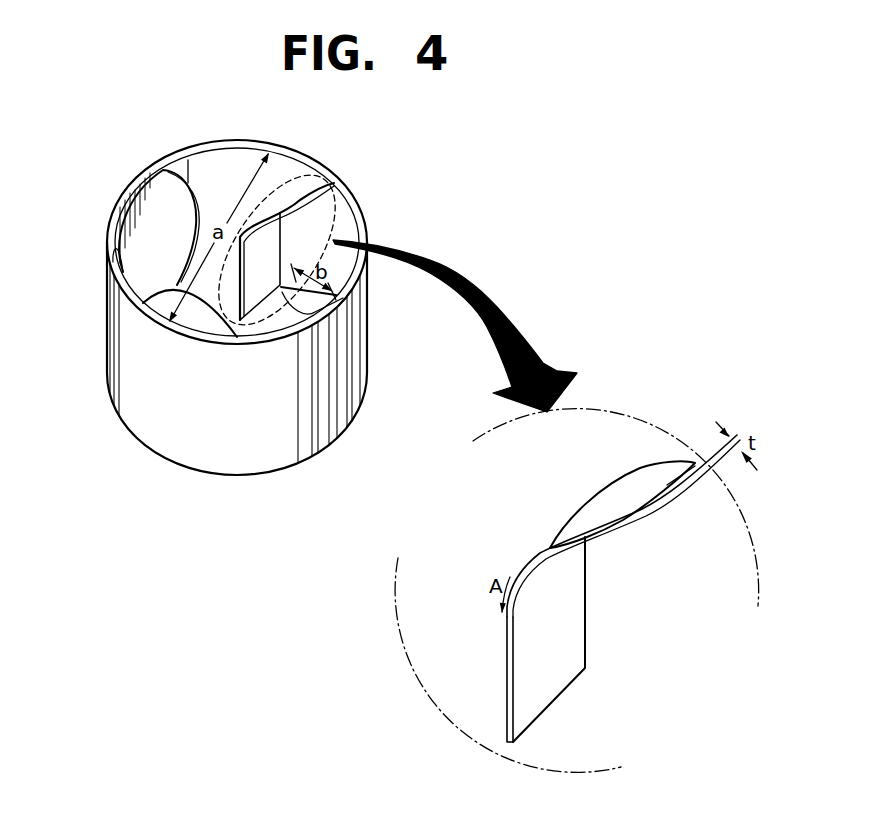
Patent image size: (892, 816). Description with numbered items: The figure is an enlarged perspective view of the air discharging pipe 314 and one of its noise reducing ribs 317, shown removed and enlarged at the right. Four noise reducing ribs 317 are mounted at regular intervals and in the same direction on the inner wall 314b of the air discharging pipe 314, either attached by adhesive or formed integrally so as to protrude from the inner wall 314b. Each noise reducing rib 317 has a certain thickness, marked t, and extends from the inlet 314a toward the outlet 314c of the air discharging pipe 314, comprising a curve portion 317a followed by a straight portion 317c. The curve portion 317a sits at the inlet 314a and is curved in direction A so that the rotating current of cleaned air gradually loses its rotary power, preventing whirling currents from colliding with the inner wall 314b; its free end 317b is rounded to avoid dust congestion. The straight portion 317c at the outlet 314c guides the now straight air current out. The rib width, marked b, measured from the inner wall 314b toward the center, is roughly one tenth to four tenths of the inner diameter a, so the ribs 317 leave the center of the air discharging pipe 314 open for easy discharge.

The air discharging pipe 314 is at (128, 385).
The inlet 314a is at (233, 168).
The inner wall 314b is at (285, 168).
The outlet 314c is at (263, 317).
The noise reducing rib 317 is at (162, 208).
The curve portion 317a is at (630, 488).
The free end 317b is at (623, 526).
The straight portion 317c is at (547, 658).